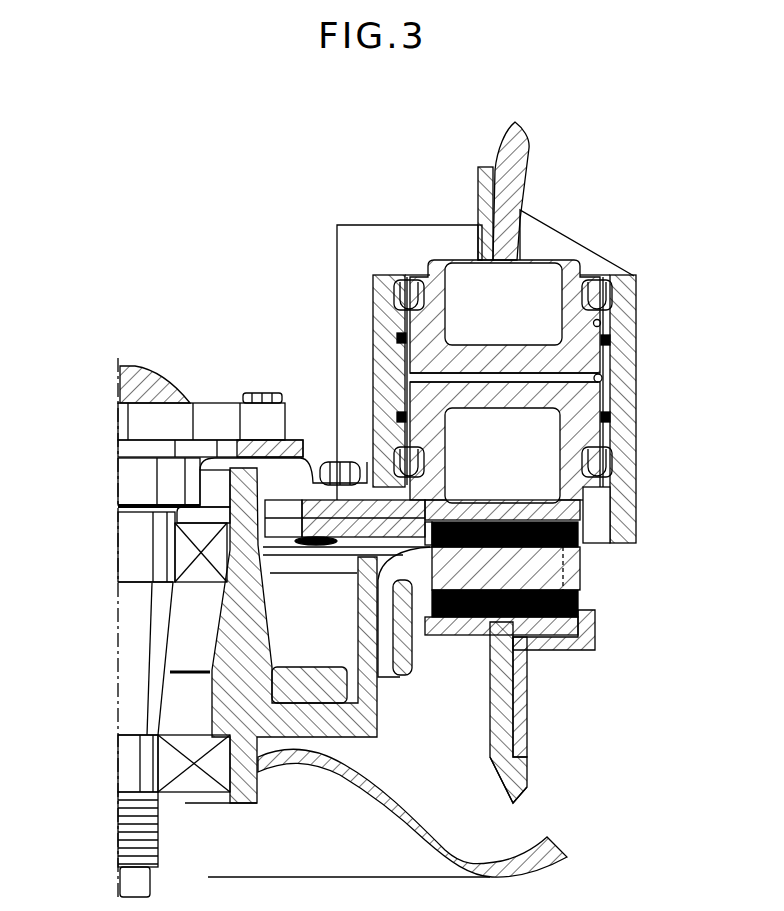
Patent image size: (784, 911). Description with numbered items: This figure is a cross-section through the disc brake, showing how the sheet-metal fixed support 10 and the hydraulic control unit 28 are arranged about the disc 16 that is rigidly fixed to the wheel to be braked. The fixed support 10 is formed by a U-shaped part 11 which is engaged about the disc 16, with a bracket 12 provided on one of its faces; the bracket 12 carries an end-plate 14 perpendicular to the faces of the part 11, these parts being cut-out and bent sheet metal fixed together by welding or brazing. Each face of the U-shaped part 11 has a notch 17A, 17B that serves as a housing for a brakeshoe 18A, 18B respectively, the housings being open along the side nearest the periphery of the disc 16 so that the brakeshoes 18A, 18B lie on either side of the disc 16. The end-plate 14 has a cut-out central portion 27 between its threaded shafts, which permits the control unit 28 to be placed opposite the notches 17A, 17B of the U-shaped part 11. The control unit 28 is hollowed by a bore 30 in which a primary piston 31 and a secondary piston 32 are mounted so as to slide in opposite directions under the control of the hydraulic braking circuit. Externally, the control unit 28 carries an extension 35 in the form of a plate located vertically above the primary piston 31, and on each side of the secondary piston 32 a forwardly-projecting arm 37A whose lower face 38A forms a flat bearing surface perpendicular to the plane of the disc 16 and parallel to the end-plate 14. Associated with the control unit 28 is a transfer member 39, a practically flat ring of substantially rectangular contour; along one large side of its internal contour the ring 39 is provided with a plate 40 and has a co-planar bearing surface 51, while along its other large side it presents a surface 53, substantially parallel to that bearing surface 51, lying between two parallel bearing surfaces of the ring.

The fixed support 10 is at (317, 498).
The U-shaped part 11 is at (413, 652).
The bracket 12 is at (355, 498).
The end-plate 14 is at (483, 170).
The disc 16 is at (582, 568).
The notch 17A is at (492, 553).
The notch 17B is at (505, 588).
The brakeshoe 18A is at (492, 498).
The brakeshoe 18B is at (549, 641).
The cut-out central portion 27 is at (489, 234).
The control unit 28 is at (640, 396).
The bore 30 is at (600, 324).
The primary piston 31 is at (574, 418).
The secondary piston 32 is at (574, 337).
The extension 35 is at (637, 520).
The forwardly-projecting arm 37A is at (548, 228).
The lower face 38A is at (520, 256).
The transfer member 39 is at (525, 798).
The plate 40 is at (596, 624).
The bearing surface 51 is at (494, 634).
The surface 53 is at (505, 264).